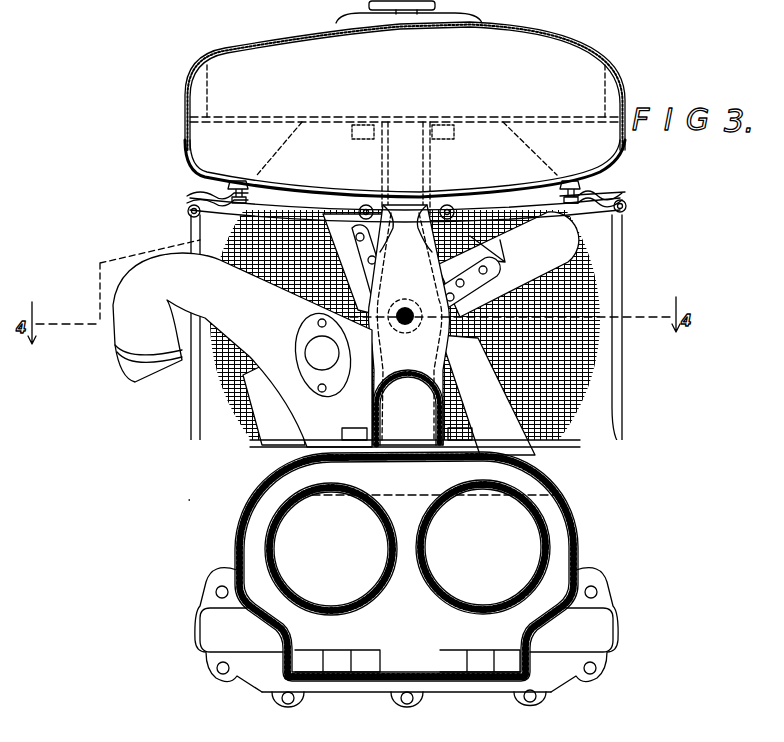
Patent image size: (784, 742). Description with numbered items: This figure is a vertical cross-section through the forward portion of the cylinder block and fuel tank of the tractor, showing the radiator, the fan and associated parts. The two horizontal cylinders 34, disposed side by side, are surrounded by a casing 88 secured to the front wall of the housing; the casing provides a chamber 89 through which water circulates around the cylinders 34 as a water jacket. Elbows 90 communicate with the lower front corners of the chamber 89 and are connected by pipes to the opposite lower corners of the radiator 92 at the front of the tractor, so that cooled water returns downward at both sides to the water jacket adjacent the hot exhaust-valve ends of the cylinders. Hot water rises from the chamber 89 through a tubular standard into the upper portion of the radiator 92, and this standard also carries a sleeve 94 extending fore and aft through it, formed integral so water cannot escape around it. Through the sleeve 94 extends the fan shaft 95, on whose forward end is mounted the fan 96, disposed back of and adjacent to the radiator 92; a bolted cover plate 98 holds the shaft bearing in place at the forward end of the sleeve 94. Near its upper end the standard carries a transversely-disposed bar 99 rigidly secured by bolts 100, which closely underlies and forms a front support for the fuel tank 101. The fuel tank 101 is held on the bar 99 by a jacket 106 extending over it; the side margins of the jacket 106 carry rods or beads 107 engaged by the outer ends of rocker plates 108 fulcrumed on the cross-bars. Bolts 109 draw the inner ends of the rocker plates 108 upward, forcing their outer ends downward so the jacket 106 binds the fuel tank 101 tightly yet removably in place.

The fuel tank 101 is at (556, 63).
The jacket 106 is at (624, 166).
The radiator 92 is at (604, 279).
The fan 96 is at (543, 242).
The sleeve 94 is at (408, 325).
The fan shaft 95 is at (411, 328).
The bolted cover plate 98 is at (378, 407).
The transversely-disposed bar 99 is at (470, 204).
The bolts 100 is at (358, 212).
The rocker plates 108 is at (187, 195).
The bolts 109 is at (232, 181).
The rods or beads 107 is at (188, 210).
The casing 88 is at (490, 454).
The cylinders 34 is at (428, 593).
The chamber 89 is at (356, 632).
The elbows 90 is at (222, 633).